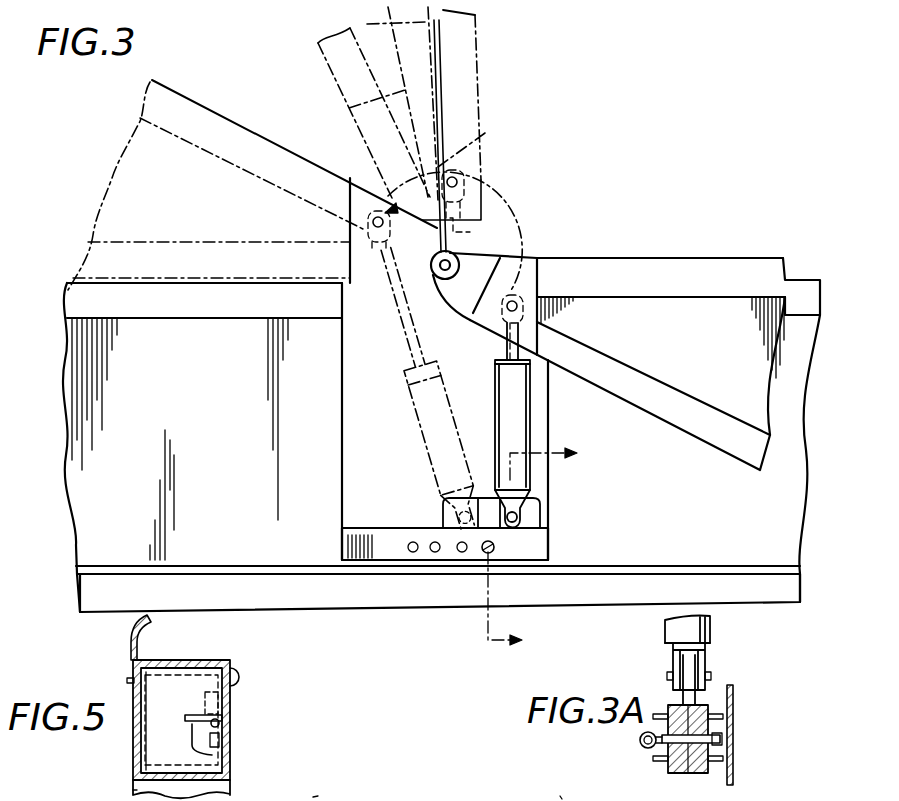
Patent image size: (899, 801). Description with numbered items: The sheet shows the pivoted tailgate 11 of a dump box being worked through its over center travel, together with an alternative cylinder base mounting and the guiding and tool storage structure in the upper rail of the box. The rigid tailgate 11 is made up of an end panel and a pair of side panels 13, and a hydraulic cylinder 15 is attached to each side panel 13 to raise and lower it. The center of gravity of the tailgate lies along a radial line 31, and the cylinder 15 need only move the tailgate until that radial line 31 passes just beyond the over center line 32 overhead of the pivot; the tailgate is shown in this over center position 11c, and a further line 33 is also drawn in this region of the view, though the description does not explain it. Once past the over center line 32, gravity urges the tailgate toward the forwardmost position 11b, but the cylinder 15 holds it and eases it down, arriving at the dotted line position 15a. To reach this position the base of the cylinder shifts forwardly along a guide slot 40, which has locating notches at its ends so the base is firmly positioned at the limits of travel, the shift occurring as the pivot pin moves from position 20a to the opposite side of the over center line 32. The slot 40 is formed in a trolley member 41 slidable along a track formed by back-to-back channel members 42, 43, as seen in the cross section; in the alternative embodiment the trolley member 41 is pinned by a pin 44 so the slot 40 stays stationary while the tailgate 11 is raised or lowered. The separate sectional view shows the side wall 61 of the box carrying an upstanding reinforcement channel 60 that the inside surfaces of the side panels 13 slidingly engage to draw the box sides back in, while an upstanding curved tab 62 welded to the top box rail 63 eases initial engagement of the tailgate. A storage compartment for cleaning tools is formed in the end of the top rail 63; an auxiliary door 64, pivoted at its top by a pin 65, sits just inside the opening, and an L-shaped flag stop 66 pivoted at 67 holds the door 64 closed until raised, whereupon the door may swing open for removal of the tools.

In FIG. 3, the tailgate 11 is at (714, 251).
In FIG. 3, the forwardmost position 11b is at (193, 100).
In FIG. 3, the over center position 11c is at (490, 86).
In FIG. 3A, the side panels 13 is at (562, 797).
In FIG. 3, the hydraulic cylinder 15 is at (531, 431).
In FIG. 3A, the hydraulic cylinder 15 is at (713, 628).
In FIG. 3, the dotted line position of cylinder 15a is at (437, 467).
In FIG. 3, the pivot pin position 20a is at (462, 183).
In FIG. 3, the radial line 31 is at (352, 110).
In FIG. 3, the over center line 32 is at (476, 15).
In FIG. 3, the piston rod 33 is at (433, 54).
In FIG. 3, the guide slot 40 is at (541, 508).
In FIG. 3A, the trolley member 41 is at (673, 704).
In FIG. 3A, the channel member 42 is at (735, 707).
In FIG. 5, the channel member 43 is at (313, 797).
In FIG. 3A, the channel member 43 is at (660, 768).
In FIG. 3, the pin 44 is at (497, 551).
In FIG. 3A, the pin 44 is at (642, 742).
In FIG. 5, the reinforcement channel 60 is at (134, 792).
In FIG. 5, the side wall 61 is at (232, 788).
In FIG. 5, the curved tab 62 is at (133, 640).
In FIG. 5, the top box rail 63 is at (232, 694).
In FIG. 5, the auxiliary door 64 is at (155, 739).
In FIG. 5, the pin 65 is at (234, 671).
In FIG. 5, the L-shaped flag stop 66 is at (220, 753).
In FIG. 5, the pivot 67 is at (222, 724).